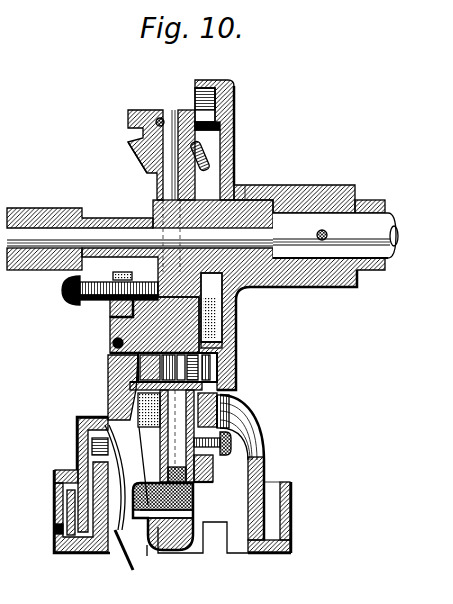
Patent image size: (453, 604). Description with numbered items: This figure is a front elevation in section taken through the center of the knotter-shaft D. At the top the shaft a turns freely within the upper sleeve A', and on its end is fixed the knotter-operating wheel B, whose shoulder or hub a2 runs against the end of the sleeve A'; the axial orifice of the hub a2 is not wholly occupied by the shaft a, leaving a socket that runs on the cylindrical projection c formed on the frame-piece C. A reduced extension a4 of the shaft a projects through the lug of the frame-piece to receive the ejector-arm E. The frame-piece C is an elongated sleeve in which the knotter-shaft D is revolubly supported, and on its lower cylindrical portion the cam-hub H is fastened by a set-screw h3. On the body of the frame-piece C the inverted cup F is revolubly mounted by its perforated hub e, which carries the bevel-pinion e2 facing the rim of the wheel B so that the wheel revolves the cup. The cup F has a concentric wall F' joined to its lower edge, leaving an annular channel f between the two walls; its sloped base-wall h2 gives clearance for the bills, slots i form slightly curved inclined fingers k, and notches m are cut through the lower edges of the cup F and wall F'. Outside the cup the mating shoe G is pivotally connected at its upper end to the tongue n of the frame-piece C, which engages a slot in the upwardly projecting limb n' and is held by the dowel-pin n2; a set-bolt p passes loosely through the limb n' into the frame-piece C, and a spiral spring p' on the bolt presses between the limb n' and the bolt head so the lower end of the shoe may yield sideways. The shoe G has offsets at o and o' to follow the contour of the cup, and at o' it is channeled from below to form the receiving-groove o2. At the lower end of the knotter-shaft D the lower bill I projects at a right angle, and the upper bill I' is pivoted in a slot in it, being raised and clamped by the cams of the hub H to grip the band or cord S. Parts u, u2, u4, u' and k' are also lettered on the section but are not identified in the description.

The knotter-operating wheel B is at (234, 127).
The plug u4 is at (252, 390).
The packing ring v is at (234, 108).
The cam block u2 is at (128, 122).
The cam surface u is at (128, 157).
The knotter-shaft D is at (162, 165).
The ejector-arm E is at (55, 208).
The frame-piece C is at (153, 205).
The cylindrical projection c is at (249, 197).
The hub of the knotter-operating wheel a2 is at (318, 185).
The upper sleeve A' is at (384, 196).
The shaft a is at (335, 235).
The reduced extension of the shaft a4 is at (140, 237).
The spiral spring p' is at (83, 280).
The set-bolt p is at (96, 294).
The upwardly-projecting limb n' is at (108, 311).
The tongue n is at (141, 325).
The dowel-pin n2 is at (113, 345).
The slot u' is at (232, 307).
The bevel-pinion e2 is at (140, 365).
The perforated hub e is at (135, 390).
The offset of the shoe o is at (87, 464).
The offset of the shoe o' is at (60, 467).
The shoe G is at (55, 497).
The receiving-groove o2 is at (58, 530).
The fingers k is at (82, 446).
The slots i is at (118, 480).
The cord S is at (125, 560).
The stop k' is at (152, 565).
The lower bill I is at (163, 518).
The upper bill I' is at (172, 500).
The set-screw h3 is at (219, 446).
The cam-hub H is at (214, 470).
The cup F is at (257, 467).
The attaching-base of the cup h2 is at (272, 553).
The concentric wall F' is at (298, 517).
The annular channel f is at (272, 494).
The notches m is at (217, 533).